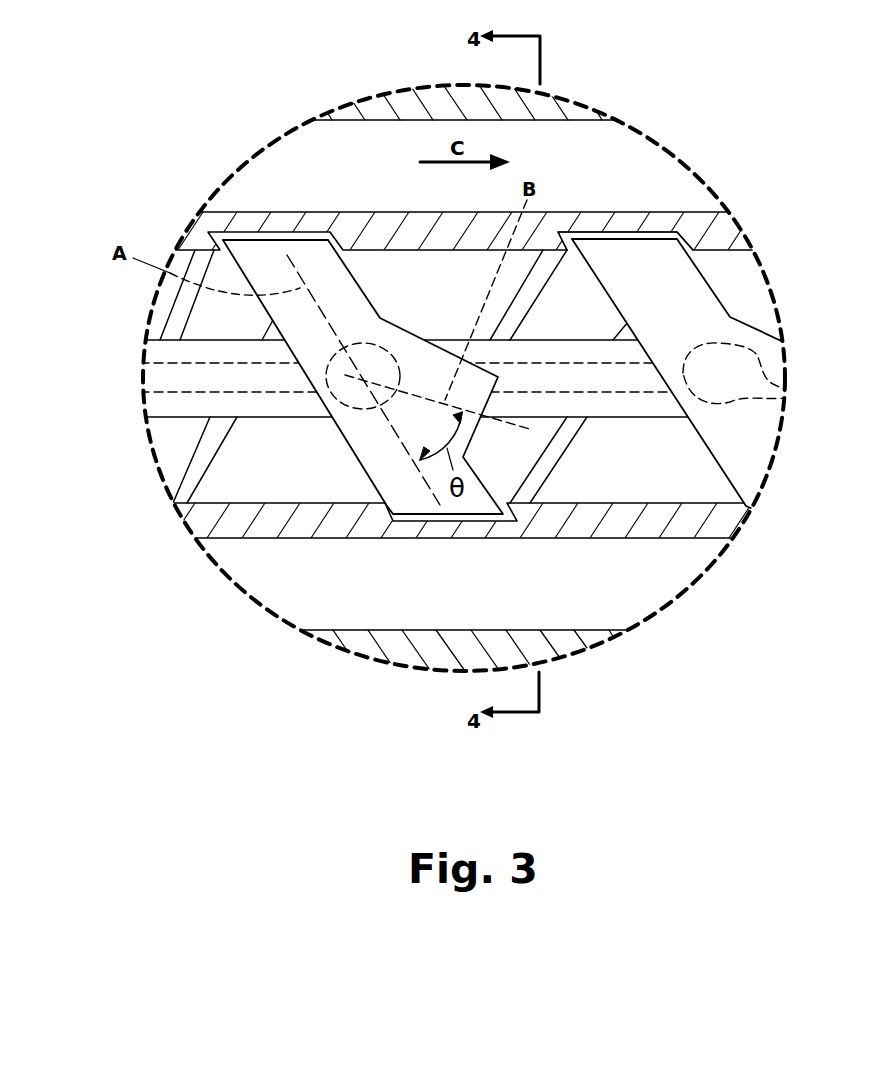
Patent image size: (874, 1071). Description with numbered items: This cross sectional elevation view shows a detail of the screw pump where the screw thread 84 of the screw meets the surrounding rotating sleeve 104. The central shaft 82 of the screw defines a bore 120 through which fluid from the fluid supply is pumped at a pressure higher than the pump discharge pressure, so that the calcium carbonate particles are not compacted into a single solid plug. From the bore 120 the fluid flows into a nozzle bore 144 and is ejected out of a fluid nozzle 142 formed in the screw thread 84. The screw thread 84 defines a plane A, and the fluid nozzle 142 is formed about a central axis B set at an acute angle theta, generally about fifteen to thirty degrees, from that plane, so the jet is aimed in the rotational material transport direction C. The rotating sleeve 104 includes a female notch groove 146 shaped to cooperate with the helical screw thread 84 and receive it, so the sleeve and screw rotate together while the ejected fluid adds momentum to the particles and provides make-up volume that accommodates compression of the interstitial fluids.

The central shaft 82 is at (610, 417).
The screw thread 84 is at (657, 245).
The rotating sleeve 104 is at (722, 232).
The bore 120 is at (630, 392).
The fluid nozzle 142 is at (476, 420).
The nozzle bore 144 is at (322, 417).
The female notch groove 146 is at (258, 230).